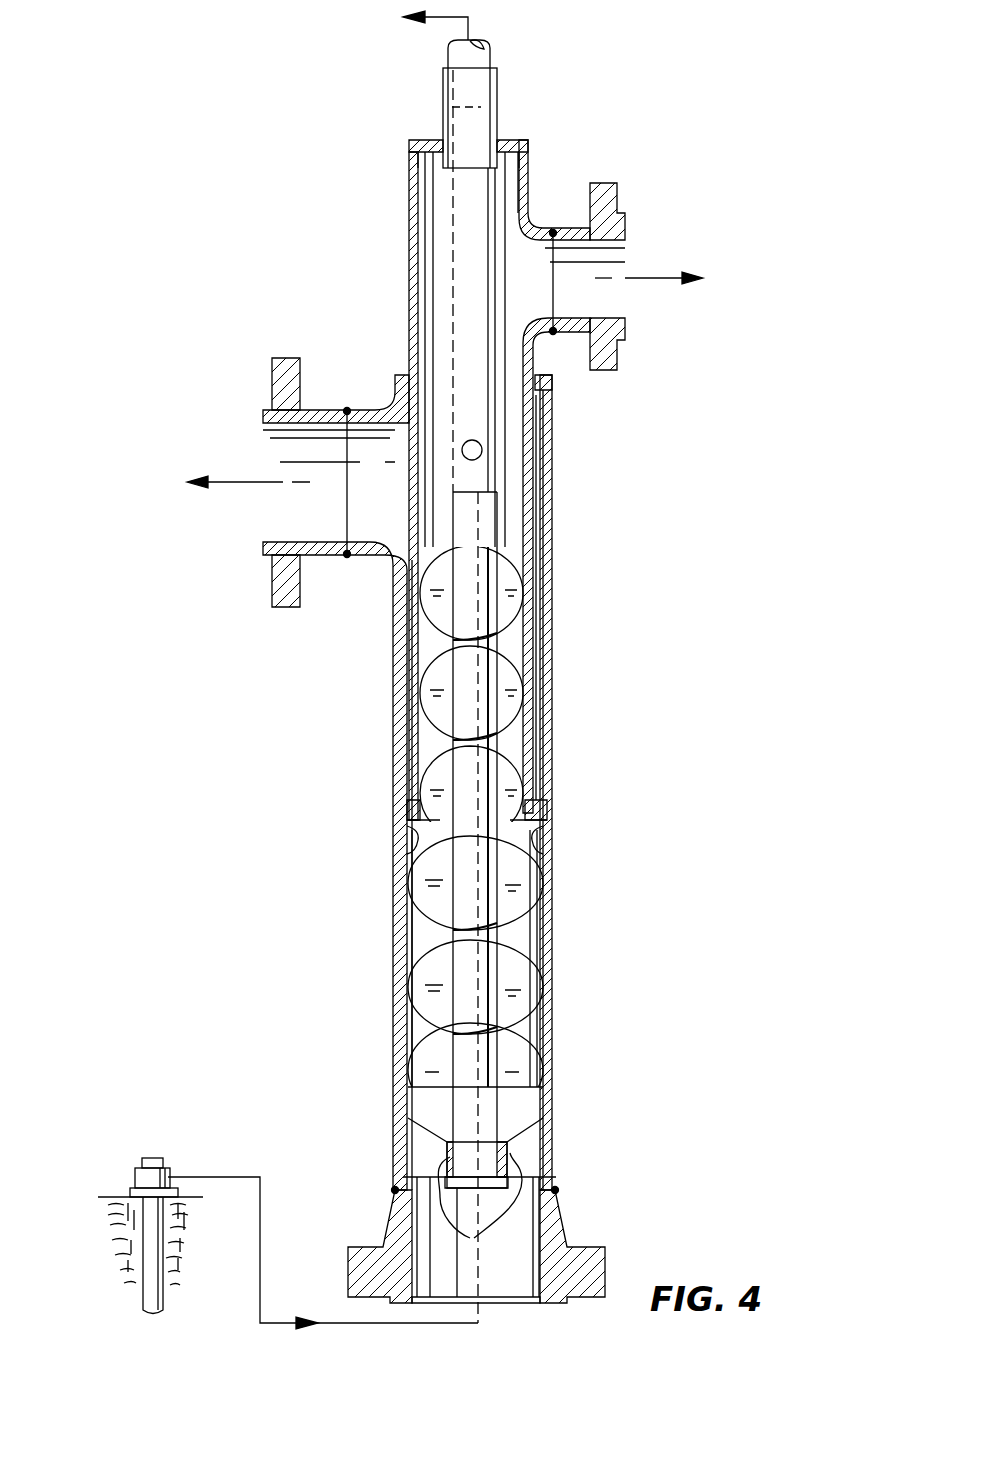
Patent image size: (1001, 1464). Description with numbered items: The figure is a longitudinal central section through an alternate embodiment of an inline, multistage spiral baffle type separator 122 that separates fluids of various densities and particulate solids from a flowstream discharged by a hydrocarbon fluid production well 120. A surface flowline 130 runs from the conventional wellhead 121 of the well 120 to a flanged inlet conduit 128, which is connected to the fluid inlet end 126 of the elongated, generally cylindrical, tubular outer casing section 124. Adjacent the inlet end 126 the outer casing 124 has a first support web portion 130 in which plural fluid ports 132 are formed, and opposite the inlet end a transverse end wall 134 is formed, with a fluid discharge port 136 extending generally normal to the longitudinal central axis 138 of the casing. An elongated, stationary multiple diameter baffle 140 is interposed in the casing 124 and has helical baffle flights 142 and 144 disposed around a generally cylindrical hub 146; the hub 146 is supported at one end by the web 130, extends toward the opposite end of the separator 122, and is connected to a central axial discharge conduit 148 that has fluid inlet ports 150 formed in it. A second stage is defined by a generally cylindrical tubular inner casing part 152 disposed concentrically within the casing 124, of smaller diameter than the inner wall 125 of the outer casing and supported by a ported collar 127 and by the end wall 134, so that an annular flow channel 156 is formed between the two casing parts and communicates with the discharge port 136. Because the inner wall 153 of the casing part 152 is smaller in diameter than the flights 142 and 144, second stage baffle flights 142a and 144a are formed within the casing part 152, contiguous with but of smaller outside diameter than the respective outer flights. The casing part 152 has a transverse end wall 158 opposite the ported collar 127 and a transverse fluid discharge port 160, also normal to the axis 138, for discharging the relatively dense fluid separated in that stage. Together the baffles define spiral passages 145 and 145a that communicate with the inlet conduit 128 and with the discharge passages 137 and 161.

The hydrocarbon fluid production well 120 is at (118, 1165).
The wellhead 121 is at (165, 1165).
The multistage spiral baffle type separator 122 is at (600, 665).
The outer casing section 124 is at (552, 780).
The inner wall 125 is at (405, 852).
The fluid inlet end 126 is at (548, 1167).
The ported collar 127 is at (540, 843).
The flanged inlet conduit 128 is at (560, 1232).
The surface flowline / first support web portion 130 is at (548, 1110).
The fluid ports 132 is at (484, 1205).
The transverse end wall 134 is at (548, 365).
The fluid discharge port 136 is at (347, 410).
The discharge passage 137 is at (398, 505).
The longitudinal central axis 138 is at (482, 885).
The stationary multiple diameter baffle 140 is at (525, 952).
The helical baffle flight 142 is at (432, 945).
The second stage baffle flight 142a is at (432, 750).
The helical baffle flight 144 is at (432, 1052).
The second stage baffle flight 144a is at (432, 762).
The spiral passage 145 is at (540, 1040).
The spiral passage 145a is at (432, 1022).
The cylindrical hub 146 is at (540, 997).
The central axial discharge conduit 148 is at (447, 262).
The fluid inlet ports 150 is at (482, 450).
The inner casing part 152 is at (533, 517).
The inner wall 153 is at (430, 642).
The annular flow channel 156 is at (540, 708).
The transverse end wall 158 is at (506, 140).
The transverse fluid discharge port 160 is at (556, 238).
The discharge passage 161 is at (541, 297).